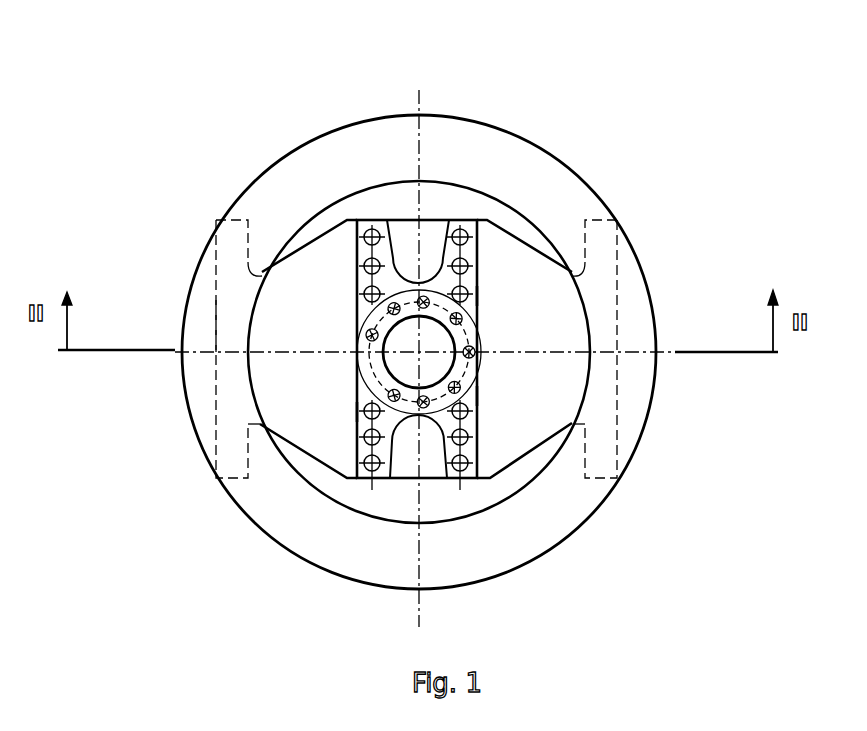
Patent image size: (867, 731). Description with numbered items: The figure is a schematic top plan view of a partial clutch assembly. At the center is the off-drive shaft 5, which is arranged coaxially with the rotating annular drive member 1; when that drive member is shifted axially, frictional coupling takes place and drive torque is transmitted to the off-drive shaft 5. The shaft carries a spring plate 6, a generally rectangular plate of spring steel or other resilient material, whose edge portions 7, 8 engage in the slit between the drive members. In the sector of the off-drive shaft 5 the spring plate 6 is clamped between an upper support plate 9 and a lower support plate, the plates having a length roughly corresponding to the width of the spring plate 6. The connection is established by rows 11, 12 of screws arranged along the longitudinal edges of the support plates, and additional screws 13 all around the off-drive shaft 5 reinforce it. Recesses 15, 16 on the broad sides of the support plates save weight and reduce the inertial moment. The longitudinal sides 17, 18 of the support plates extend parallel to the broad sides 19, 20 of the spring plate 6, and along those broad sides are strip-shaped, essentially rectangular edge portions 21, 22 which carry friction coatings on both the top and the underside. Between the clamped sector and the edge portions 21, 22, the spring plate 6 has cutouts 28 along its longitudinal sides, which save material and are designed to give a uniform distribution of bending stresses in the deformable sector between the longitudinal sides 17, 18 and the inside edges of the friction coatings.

The drive member 1 is at (263, 182).
The off-drive shaft 5 is at (430, 337).
The spring plate 6 is at (440, 230).
The edge portion 7 is at (226, 243).
The edge portion 8 is at (606, 283).
The upper support plate 9 is at (461, 225).
The row of screws 11 is at (372, 225).
The row of screws 12 is at (477, 296).
The additional screws 13 is at (364, 372).
The recess 15 is at (402, 233).
The recess 16 is at (408, 450).
The longitudinal side 17 is at (356, 410).
The longitudinal side 18 is at (477, 396).
The broad side 19 is at (215, 326).
The broad side 20 is at (616, 332).
The edge portion 21 is at (225, 289).
The edge portion 22 is at (597, 245).
The cutouts 28 is at (301, 238).